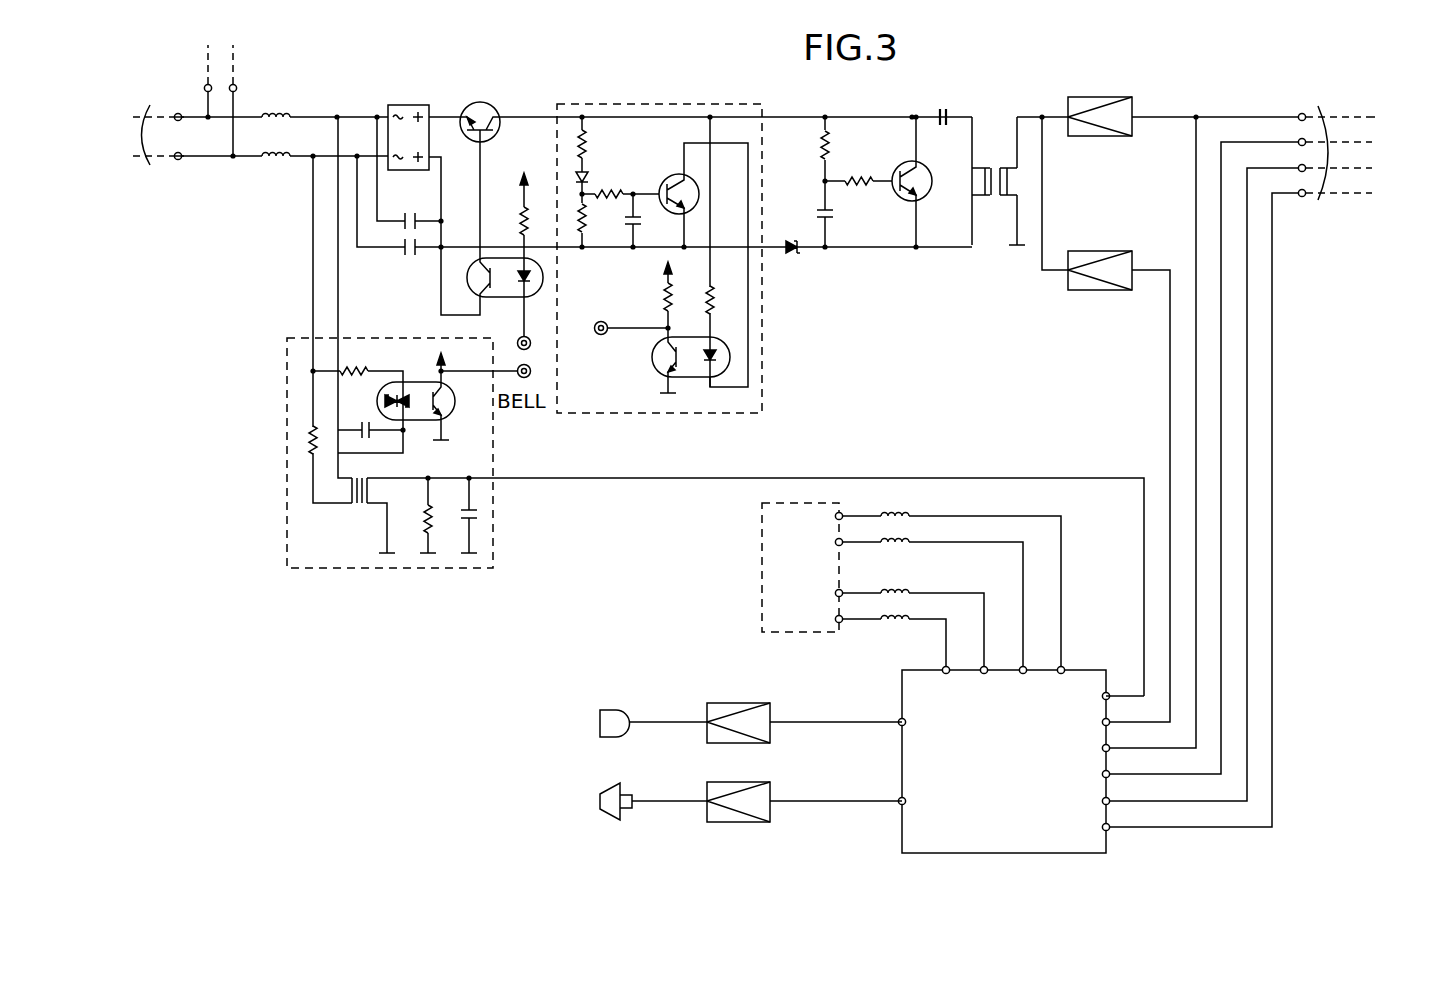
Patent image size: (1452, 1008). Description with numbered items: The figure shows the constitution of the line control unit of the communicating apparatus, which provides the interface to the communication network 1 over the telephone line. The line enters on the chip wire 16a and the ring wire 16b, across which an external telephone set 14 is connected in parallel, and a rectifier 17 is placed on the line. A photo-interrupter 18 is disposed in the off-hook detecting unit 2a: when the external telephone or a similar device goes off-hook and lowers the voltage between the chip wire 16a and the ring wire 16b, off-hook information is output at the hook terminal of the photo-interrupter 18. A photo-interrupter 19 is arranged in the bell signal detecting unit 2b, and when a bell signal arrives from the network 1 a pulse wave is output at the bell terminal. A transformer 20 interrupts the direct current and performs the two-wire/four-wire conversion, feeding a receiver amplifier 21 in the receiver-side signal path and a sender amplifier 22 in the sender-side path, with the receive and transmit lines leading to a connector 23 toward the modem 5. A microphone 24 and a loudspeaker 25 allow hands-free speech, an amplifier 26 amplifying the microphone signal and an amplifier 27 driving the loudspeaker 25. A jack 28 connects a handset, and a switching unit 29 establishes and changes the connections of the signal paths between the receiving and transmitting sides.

The communication network 1 is at (148, 168).
The external telephone set 14 is at (280, 97).
The chip wire 16a is at (193, 114).
The ring wire 16b is at (222, 158).
The rectifier 17 is at (415, 105).
The photo-interrupter 18 is at (692, 378).
The photo-interrupter 19 is at (455, 405).
The transformer 20 is at (996, 150).
The receiver amplifier 21 is at (1100, 136).
The sender amplifier 22 is at (1100, 290).
The modem connector 23 is at (1318, 198).
The microphone 24 is at (600, 722).
The loudspeaker 25 is at (600, 801).
The amplifier 26 is at (736, 703).
The amplifier 27 is at (738, 823).
The jack 28 is at (760, 566).
The switching unit 29 is at (1091, 668).
The off-hook detecting unit 2a is at (764, 362).
The bell signal detecting unit 2b is at (362, 570).
The modem 5 is at (1380, 100).